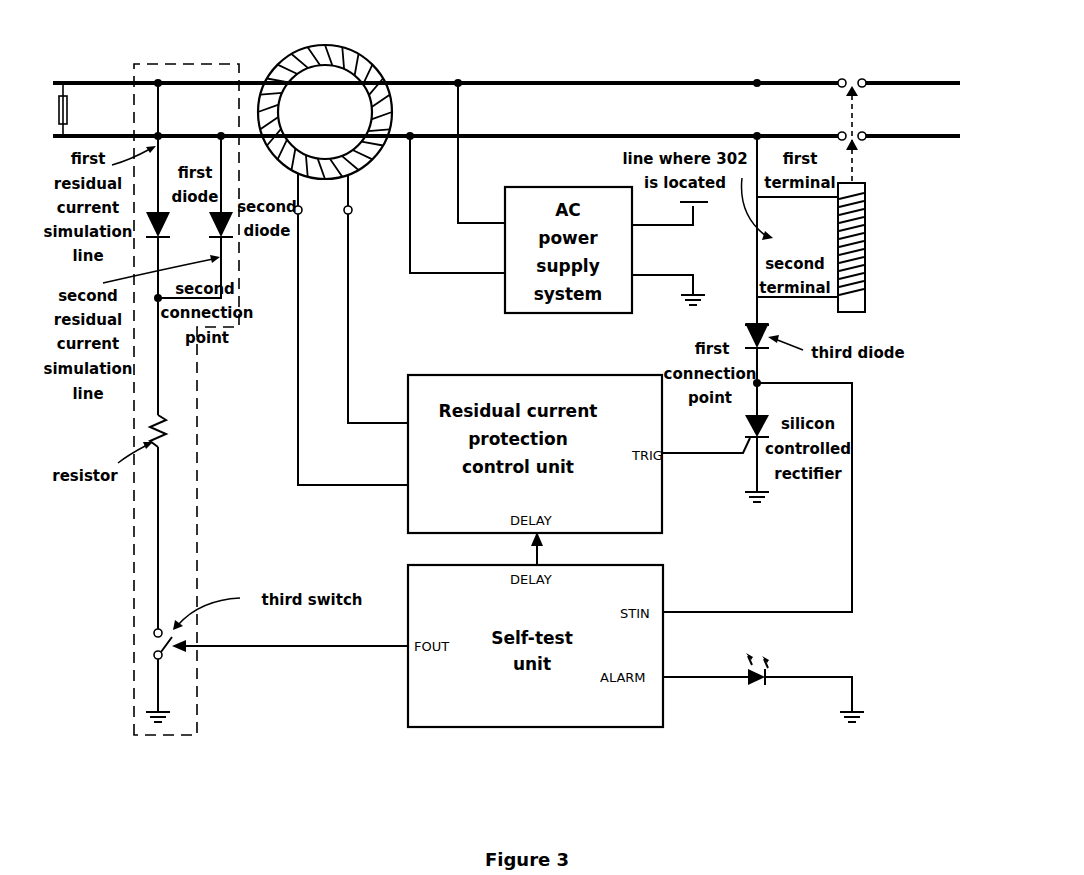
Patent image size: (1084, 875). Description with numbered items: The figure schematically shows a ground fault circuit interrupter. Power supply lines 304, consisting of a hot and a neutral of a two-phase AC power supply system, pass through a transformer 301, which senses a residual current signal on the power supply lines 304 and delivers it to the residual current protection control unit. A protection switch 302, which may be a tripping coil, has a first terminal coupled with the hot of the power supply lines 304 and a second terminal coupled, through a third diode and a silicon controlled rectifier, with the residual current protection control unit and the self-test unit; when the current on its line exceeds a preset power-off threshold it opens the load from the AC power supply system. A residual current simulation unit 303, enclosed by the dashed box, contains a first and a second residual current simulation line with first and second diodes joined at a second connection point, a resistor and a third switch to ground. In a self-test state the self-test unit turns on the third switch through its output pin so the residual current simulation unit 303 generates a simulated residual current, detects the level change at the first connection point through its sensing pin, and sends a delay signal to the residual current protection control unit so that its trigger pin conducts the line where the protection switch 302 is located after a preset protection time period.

The transformer 301 is at (394, 50).
The protection switch 302 is at (891, 234).
The residual current simulation unit 303 is at (114, 583).
The power supply lines 304 is at (548, 66).